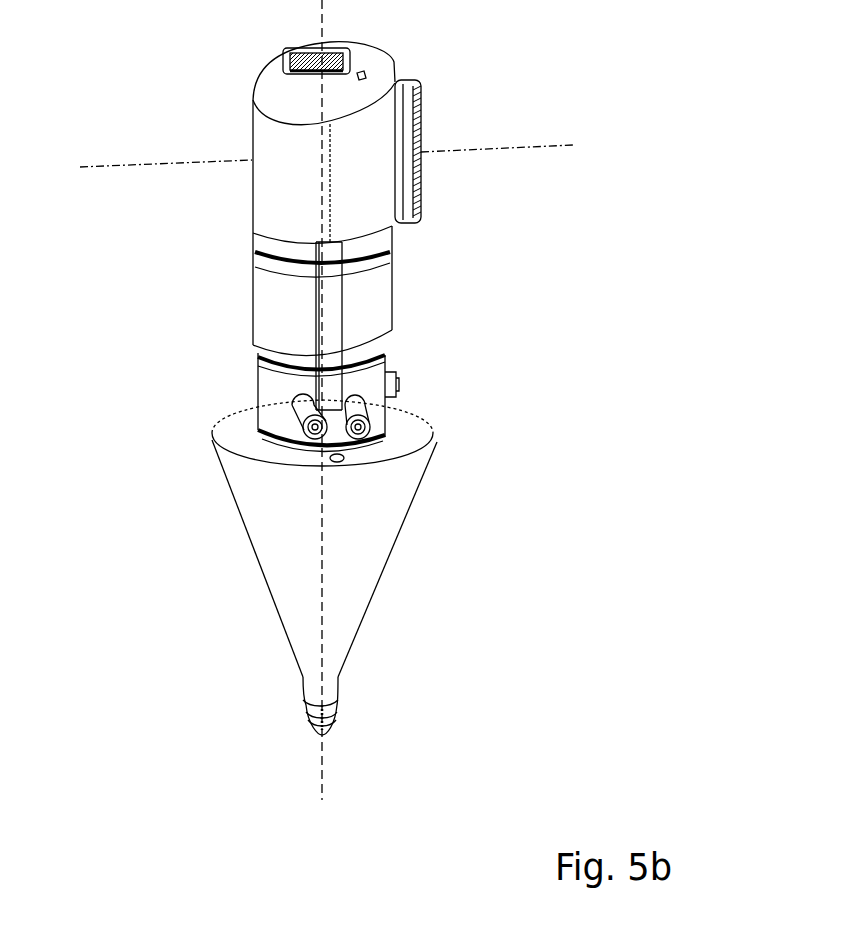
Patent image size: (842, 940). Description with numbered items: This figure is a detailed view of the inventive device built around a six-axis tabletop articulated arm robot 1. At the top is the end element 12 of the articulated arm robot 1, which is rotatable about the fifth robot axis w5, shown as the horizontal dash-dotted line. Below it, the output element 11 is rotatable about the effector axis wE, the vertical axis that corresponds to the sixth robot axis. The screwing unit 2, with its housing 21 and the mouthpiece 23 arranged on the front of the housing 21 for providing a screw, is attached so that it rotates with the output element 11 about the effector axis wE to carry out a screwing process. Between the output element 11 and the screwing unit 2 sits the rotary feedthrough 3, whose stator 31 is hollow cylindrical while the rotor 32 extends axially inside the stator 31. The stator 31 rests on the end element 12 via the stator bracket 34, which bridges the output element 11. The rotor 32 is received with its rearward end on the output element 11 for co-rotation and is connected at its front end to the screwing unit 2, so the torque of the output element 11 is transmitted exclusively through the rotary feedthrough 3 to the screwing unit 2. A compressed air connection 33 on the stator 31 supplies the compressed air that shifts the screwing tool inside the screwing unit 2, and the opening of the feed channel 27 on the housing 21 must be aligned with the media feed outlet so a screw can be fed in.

The articulated arm robot 1 is at (345, 266).
The end element 12 is at (278, 193).
The output element 11 is at (267, 310).
The stator bracket 34 is at (330, 307).
The stator 31 is at (263, 393).
The compressed air connection 33 is at (400, 383).
The rotor 32 is at (263, 440).
The rotary feedthrough 3 is at (394, 425).
The feed channel 27 is at (340, 446).
The screwing unit 2 is at (316, 608).
The housing 21 is at (300, 553).
The mouthpiece 23 is at (300, 716).
The fifth robot axis w5 is at (178, 158).
The effector axis wE is at (323, 771).